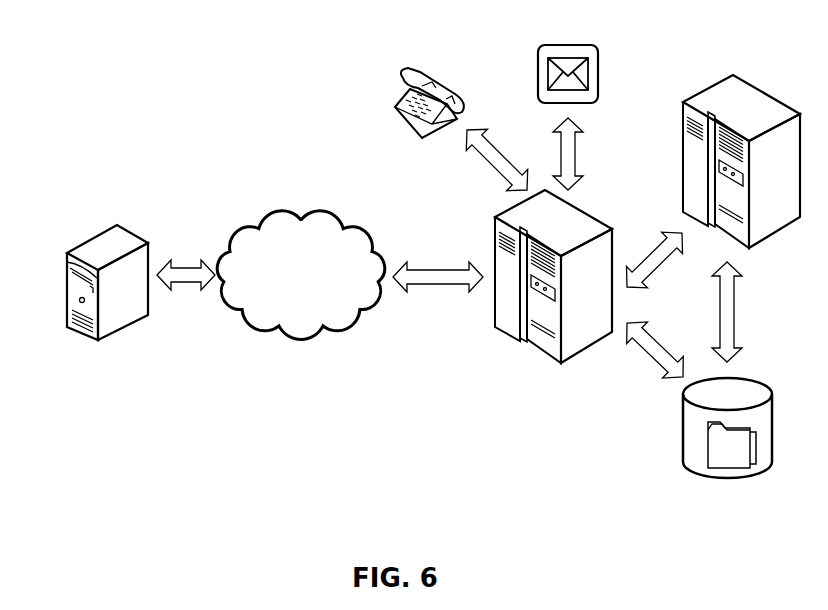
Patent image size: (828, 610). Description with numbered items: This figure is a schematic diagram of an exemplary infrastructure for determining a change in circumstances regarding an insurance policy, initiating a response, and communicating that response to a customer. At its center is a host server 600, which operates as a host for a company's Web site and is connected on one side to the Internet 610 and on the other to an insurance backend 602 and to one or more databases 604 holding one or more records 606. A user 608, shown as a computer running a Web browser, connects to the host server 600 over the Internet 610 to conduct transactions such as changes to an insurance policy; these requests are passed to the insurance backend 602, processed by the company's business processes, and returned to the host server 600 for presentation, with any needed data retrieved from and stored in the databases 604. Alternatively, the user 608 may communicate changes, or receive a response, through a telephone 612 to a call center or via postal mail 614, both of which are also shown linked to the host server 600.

The host server 600 is at (497, 246).
The insurance backend 602 is at (683, 148).
The databases 604 is at (683, 435).
The records 606 is at (732, 445).
The user 608 is at (67, 272).
The Internet 610 is at (296, 333).
The telephone 612 is at (400, 103).
The postal mail 614 is at (538, 73).